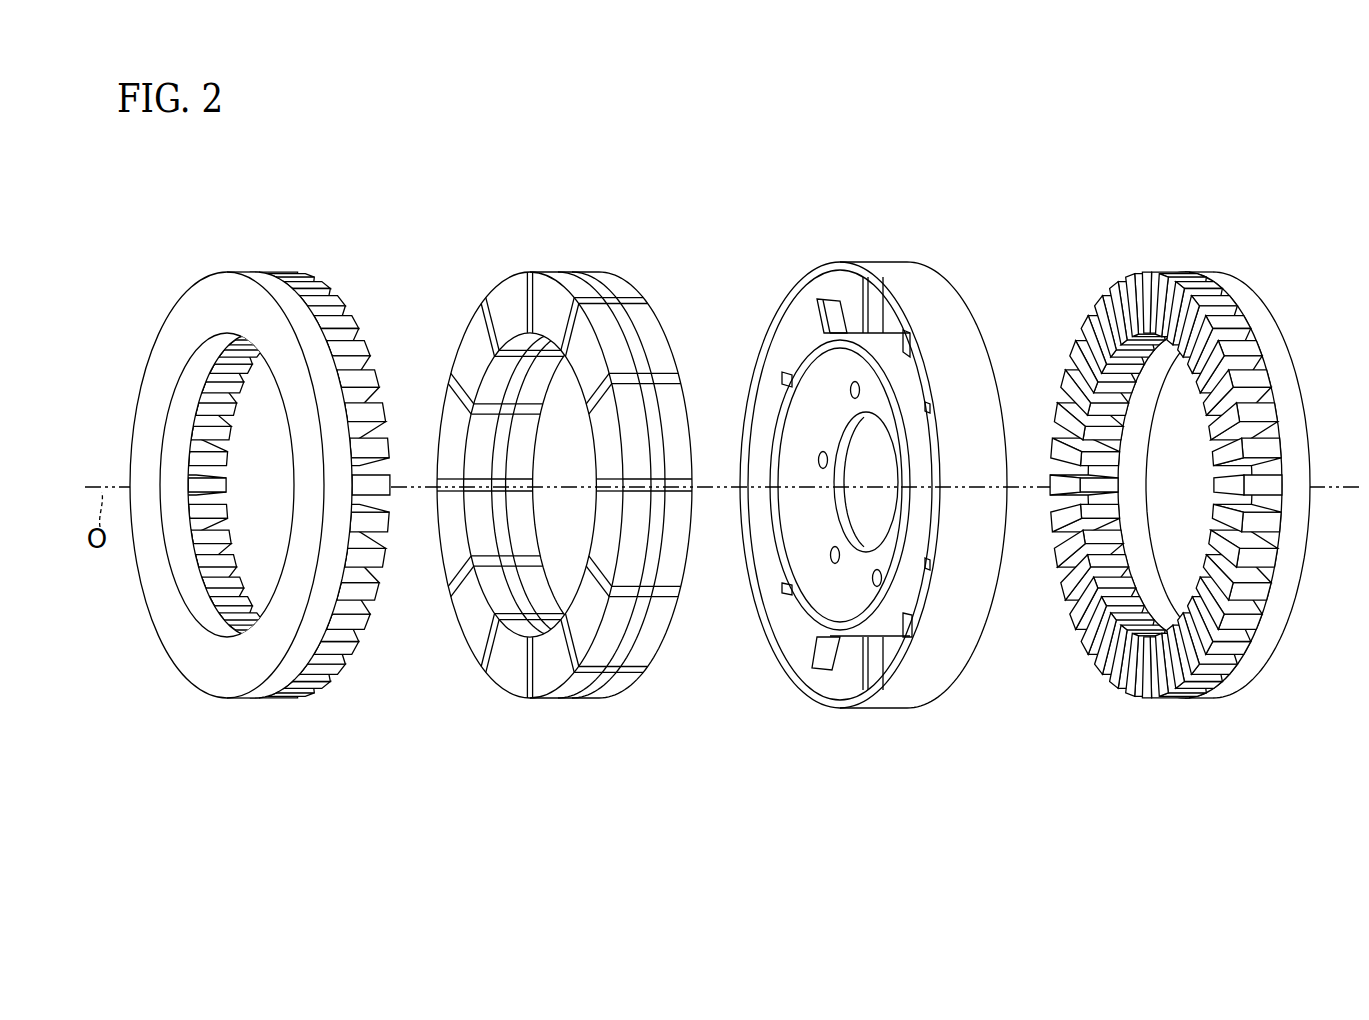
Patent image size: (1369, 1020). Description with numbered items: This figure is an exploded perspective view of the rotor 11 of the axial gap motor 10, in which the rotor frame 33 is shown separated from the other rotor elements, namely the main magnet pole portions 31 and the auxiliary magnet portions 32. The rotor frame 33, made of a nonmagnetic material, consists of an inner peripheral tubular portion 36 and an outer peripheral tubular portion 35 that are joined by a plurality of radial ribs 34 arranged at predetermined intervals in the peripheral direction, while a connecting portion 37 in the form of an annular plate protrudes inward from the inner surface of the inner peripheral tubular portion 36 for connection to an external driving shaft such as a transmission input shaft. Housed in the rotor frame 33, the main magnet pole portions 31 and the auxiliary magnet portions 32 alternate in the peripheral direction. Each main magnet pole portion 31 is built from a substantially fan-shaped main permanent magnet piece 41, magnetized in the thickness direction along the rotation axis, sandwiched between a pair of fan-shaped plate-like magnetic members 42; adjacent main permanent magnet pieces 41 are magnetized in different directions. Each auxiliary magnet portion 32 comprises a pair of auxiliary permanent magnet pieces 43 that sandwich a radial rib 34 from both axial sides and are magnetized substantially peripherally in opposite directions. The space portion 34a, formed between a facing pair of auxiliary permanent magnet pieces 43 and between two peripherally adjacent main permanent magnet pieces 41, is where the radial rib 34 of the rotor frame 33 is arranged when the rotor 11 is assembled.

The axial gap motor 10 is at (727, 445).
The rotor 11 is at (746, 419).
The main magnet pole portion 31 is at (591, 455).
The auxiliary magnet portion 32 is at (637, 456).
The rotor frame 33 is at (898, 447).
The radial rib 34 is at (856, 441).
The space portion 34a is at (676, 476).
The outer peripheral tubular portion 35 is at (882, 474).
The inner peripheral tubular portion 36 is at (913, 458).
The connecting portion 37 is at (927, 434).
The main permanent magnet piece 41 is at (541, 455).
The magnetic member 42 is at (658, 485).
The auxiliary permanent magnet piece 43 is at (651, 485).